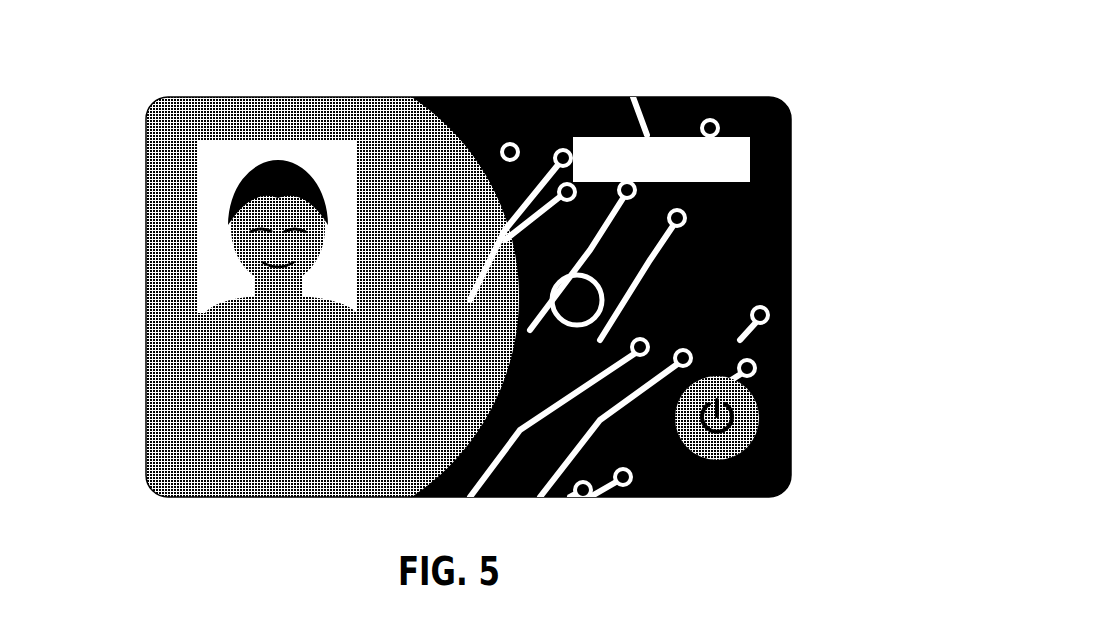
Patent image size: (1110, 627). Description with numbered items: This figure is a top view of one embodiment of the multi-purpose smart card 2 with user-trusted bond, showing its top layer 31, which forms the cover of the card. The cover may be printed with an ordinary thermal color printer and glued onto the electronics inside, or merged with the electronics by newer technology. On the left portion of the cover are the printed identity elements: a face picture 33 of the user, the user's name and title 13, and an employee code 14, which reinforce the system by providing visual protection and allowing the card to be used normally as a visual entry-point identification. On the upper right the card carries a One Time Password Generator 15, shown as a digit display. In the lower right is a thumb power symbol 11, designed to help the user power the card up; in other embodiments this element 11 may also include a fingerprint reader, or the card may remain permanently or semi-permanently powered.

The multi-purpose card 2 is at (456, 274).
The thumb power symbol 11 is at (752, 392).
The name and title 13 is at (193, 388).
The employee code 14 is at (192, 460).
The One Time Password Generator 15 is at (722, 143).
The top layer 31 is at (788, 208).
The face picture 33 is at (213, 267).